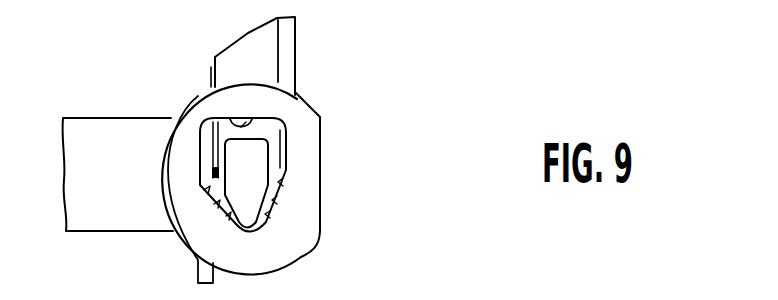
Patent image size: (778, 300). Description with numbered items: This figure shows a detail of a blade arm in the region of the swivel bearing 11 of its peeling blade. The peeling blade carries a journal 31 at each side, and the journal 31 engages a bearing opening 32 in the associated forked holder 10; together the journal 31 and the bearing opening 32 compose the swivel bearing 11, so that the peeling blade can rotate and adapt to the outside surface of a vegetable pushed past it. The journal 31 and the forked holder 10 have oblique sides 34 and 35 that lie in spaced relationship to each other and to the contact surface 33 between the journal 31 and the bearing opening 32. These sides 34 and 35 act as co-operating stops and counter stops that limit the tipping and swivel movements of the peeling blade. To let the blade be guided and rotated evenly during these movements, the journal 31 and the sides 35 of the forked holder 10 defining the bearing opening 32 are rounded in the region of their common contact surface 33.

The forked holder 10 is at (90, 128).
The swivel bearing 11 is at (313, 93).
The journal 31 is at (263, 146).
The bearing opening 32 is at (228, 122).
The contact surface 33 is at (250, 232).
The oblique side 34 is at (245, 230).
The oblique side 35 is at (213, 194).